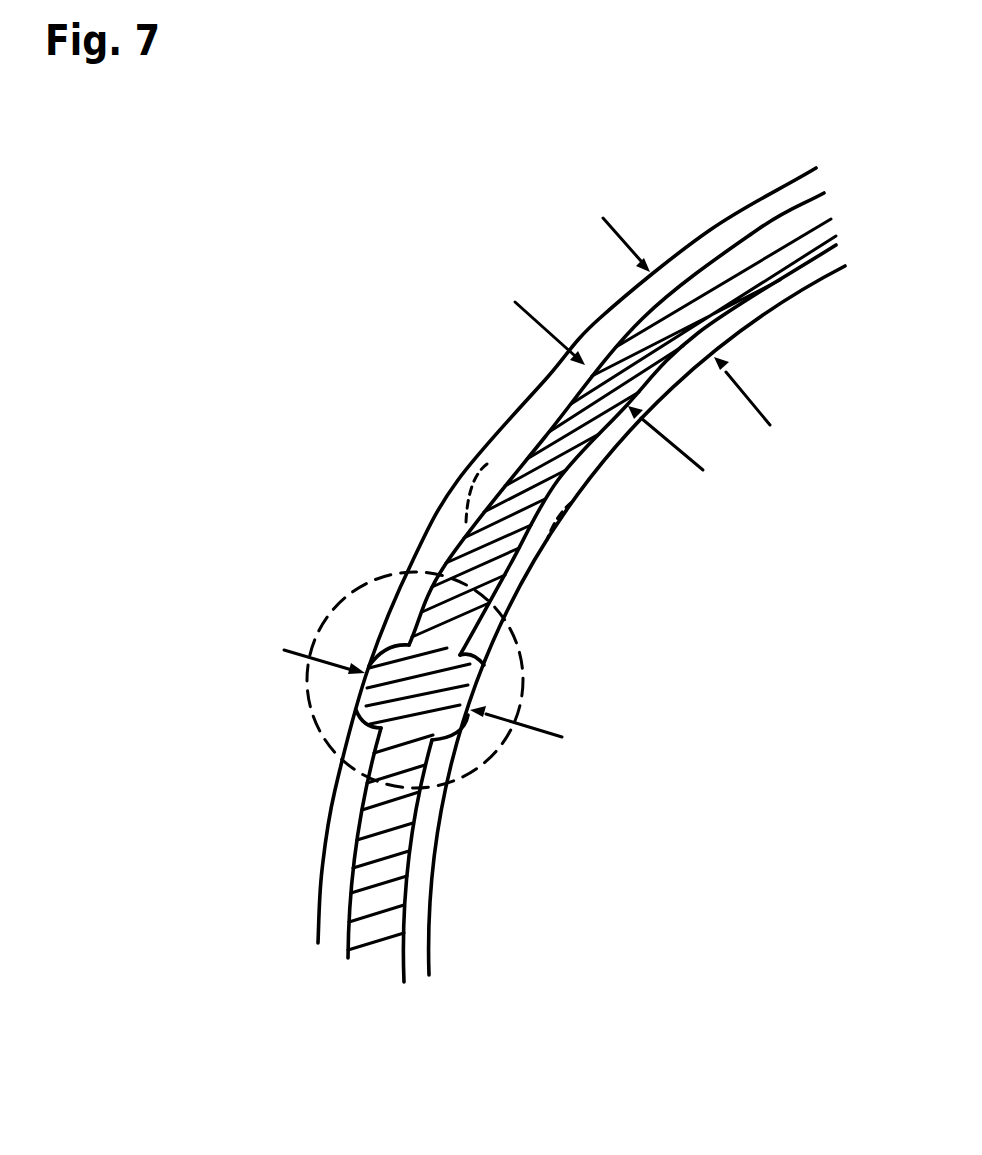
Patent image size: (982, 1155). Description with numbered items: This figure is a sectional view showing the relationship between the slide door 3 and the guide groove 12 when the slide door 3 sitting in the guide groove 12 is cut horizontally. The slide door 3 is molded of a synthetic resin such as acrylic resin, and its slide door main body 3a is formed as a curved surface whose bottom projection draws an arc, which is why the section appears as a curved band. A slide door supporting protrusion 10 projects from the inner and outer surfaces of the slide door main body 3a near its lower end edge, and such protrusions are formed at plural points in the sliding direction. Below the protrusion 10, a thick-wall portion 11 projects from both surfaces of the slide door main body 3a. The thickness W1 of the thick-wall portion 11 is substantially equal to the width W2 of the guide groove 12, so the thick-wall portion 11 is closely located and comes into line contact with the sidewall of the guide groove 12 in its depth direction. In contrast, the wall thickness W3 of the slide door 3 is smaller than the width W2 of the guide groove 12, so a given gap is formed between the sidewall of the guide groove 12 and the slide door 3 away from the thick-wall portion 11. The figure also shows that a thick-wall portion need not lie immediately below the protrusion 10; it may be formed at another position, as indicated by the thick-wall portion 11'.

The slide door 3 is at (732, 283).
The slide door main body 3a is at (637, 620).
The slide door supporting protrusion 10 is at (352, 598).
The thick-wall portion 11 is at (380, 707).
The thick-wall portion 11' is at (583, 613).
The guide groove 12 is at (330, 823).
The thickness of the thick-wall portion W1 is at (467, 656).
The width of the guide groove W2 is at (657, 285).
The wall thickness of the slide door W3 is at (608, 390).